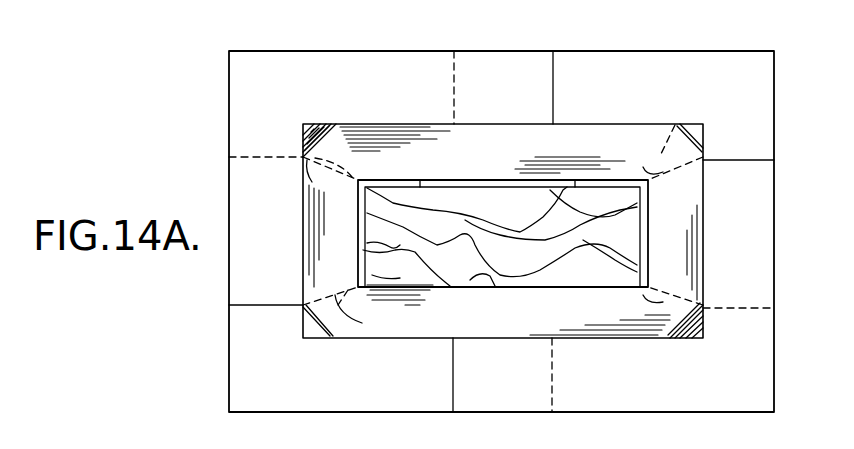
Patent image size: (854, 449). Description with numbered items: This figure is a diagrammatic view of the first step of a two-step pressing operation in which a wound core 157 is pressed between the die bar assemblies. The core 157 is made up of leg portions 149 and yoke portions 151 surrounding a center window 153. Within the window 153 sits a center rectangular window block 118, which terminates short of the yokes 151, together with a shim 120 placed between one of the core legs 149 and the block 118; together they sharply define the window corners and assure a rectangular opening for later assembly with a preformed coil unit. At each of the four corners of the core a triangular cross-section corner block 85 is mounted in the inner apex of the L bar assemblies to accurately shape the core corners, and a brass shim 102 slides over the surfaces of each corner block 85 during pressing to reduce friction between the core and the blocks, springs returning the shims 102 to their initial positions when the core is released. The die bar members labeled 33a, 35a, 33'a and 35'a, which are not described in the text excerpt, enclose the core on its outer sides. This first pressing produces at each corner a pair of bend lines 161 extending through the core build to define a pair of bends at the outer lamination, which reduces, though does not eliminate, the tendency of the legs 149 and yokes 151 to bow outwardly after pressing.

The panel section 33'a is at (341, 90).
The panel section 35'a is at (663, 91).
The panel section 33a is at (282, 397).
The panel section 35a is at (708, 400).
The corner block 85 is at (310, 137).
The shim 102 is at (320, 340).
The leg portions 149 is at (572, 137).
The core 157 is at (500, 171).
The center window 153 is at (487, 280).
The yoke portions 151 is at (308, 237).
The bend lines 161 is at (503, 225).
The shim 120 is at (467, 183).
The window block 118 is at (570, 280).